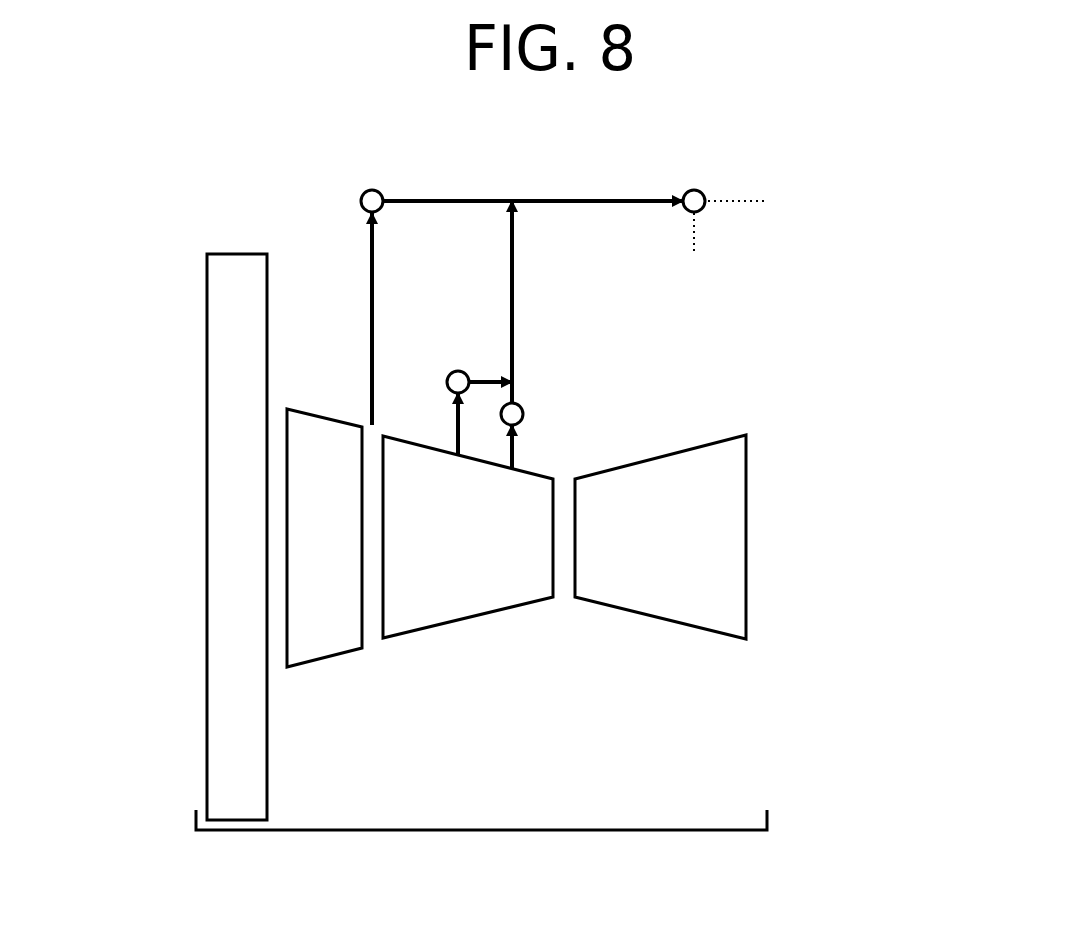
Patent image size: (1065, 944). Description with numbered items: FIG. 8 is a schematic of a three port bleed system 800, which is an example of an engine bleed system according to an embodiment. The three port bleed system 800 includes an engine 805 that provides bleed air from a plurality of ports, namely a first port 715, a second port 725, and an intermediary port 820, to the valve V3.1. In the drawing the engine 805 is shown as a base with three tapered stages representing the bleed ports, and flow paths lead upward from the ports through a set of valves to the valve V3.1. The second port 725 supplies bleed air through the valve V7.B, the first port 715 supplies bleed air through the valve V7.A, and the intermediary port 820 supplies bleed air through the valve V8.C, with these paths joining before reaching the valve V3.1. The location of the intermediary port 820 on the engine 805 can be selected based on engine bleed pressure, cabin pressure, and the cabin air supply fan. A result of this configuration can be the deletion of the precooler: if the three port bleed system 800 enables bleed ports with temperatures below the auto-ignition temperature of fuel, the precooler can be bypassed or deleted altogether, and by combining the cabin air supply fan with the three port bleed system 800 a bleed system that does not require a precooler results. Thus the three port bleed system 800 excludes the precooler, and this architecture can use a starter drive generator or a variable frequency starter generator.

The three port bleed system 800 is at (993, 132).
The engine 805 is at (758, 830).
The first port 715 is at (521, 466).
The second port 725 is at (357, 418).
The intermediary port 820 is at (448, 445).
The valve V7.B is at (366, 193).
The valve V7.A is at (522, 410).
The valve V8.C is at (451, 375).
The valve V3.1 is at (687, 193).